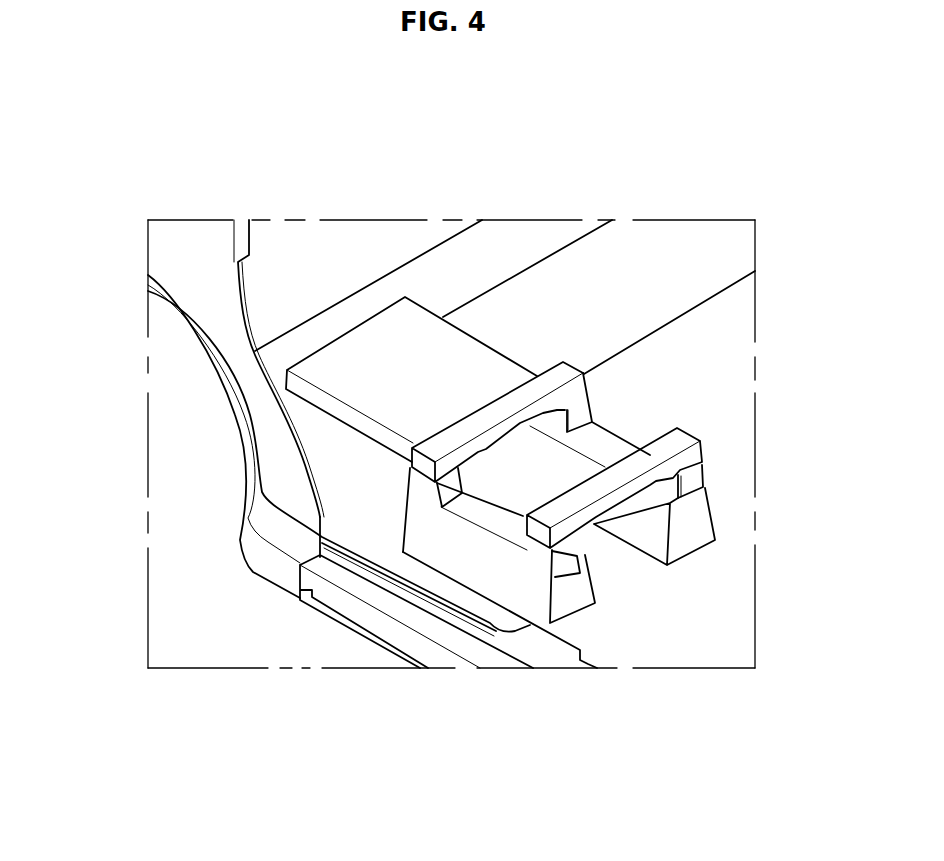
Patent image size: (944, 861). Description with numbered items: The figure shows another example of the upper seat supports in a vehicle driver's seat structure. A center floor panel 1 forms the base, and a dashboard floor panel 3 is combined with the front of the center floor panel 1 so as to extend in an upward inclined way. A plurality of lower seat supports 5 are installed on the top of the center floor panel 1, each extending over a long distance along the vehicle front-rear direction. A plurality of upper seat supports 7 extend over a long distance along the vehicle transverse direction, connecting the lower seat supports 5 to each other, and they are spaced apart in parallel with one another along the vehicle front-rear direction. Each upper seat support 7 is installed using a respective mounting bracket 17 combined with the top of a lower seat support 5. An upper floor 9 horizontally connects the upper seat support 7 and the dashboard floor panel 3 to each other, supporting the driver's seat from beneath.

The center floor panel 1 is at (661, 623).
The dashboard floor panel 3 is at (353, 267).
The lower seat support 5 is at (697, 520).
The upper seat support 7 is at (526, 395).
The upper floor 9 is at (412, 330).
The mounting bracket 17 is at (418, 489).